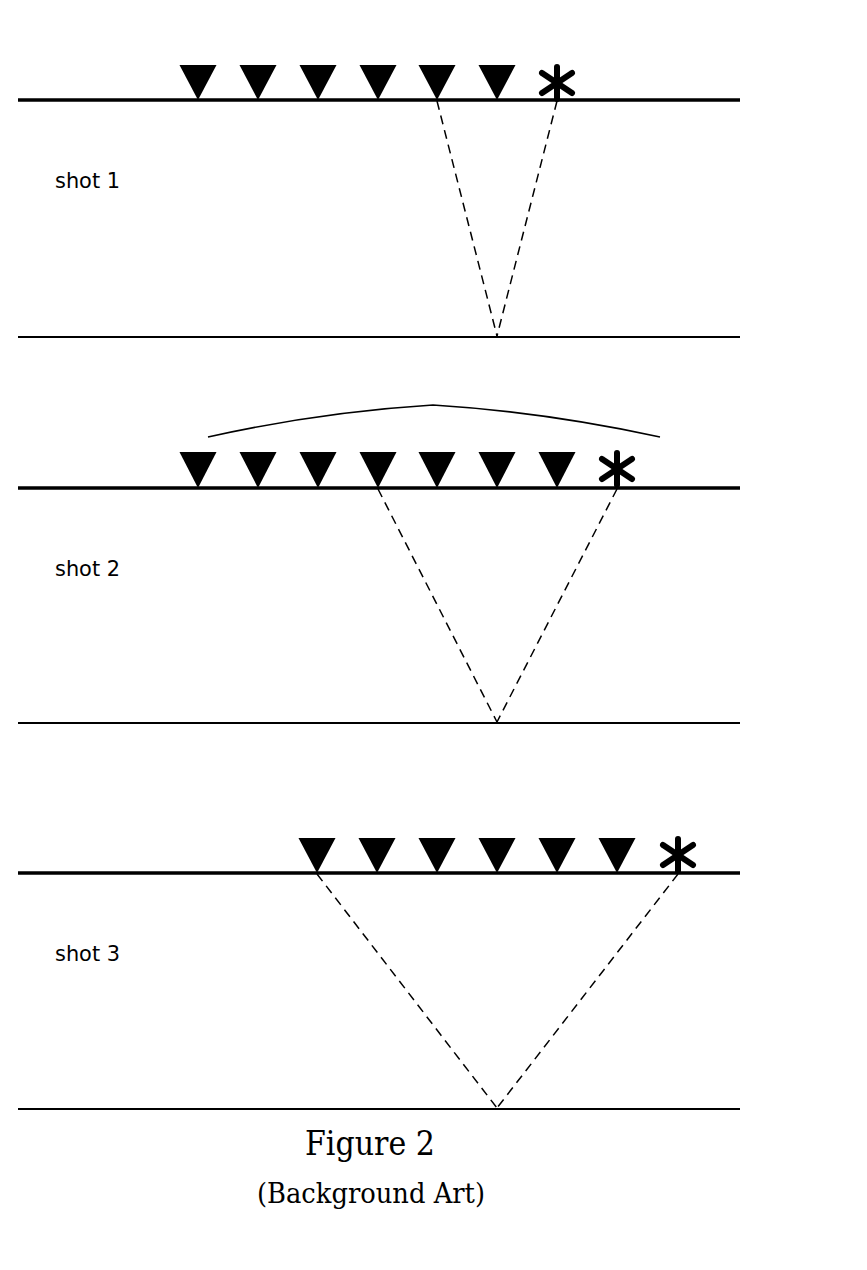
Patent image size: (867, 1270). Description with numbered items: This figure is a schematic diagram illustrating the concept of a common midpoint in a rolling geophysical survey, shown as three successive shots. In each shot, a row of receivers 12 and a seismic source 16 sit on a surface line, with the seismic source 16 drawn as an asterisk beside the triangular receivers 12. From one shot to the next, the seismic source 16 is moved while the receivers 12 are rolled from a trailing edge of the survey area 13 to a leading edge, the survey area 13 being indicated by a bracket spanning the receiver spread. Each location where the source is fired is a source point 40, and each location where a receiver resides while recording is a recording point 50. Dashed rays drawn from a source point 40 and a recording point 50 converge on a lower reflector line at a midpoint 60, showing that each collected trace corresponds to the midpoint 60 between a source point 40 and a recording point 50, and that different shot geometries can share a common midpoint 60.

The receiver 12 is at (258, 65).
The survey area 13 is at (434, 409).
The seismic source 16 is at (557, 67).
The source point 40 is at (557, 101).
The recording point 50 is at (258, 101).
The midpoint 60 is at (497, 336).